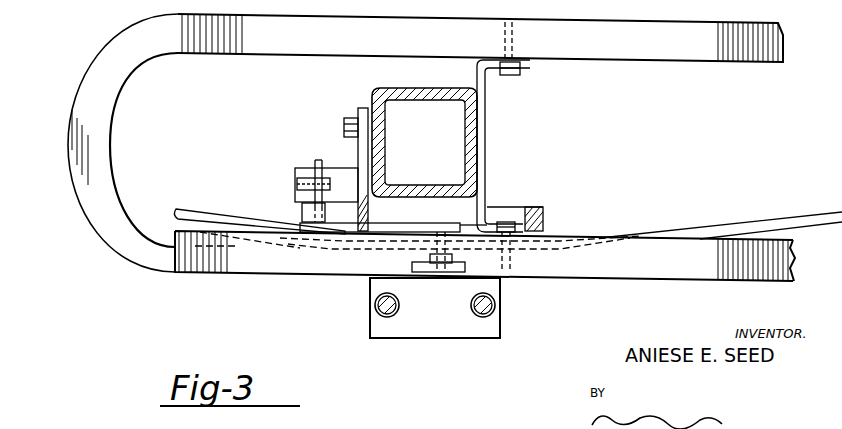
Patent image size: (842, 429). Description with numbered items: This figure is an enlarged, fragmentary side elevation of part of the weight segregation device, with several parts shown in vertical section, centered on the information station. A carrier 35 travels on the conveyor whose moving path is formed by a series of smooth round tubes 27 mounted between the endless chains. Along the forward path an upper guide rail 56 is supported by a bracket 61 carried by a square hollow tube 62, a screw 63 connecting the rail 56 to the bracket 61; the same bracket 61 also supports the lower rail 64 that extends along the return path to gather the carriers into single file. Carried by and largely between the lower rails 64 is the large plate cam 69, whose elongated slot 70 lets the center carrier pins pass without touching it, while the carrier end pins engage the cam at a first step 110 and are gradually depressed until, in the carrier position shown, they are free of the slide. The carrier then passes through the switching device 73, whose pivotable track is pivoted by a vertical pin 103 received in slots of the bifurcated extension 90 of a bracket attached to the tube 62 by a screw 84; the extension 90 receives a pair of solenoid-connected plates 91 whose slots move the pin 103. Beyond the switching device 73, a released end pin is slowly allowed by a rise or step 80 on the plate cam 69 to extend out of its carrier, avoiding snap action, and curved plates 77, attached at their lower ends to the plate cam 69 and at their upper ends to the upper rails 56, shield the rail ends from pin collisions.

The tubes 27 is at (375, 306).
The carrier 35 is at (444, 322).
The upper guide rail 56 is at (698, 52).
The bracket 61 is at (485, 134).
The square hollow tube 62 is at (400, 88).
The screw 63 is at (510, 75).
The lower rail 64 is at (702, 262).
The plate cam 69 is at (793, 215).
The elongated slot 70 is at (230, 218).
The switching device 73 is at (292, 218).
The curved plate 77 is at (110, 117).
The step 80 is at (287, 243).
The screw 84 is at (347, 122).
The bifurcated extension 90 is at (297, 172).
The plate 91 is at (297, 183).
The vertical pin 103 is at (328, 150).
The first step 110 is at (632, 240).